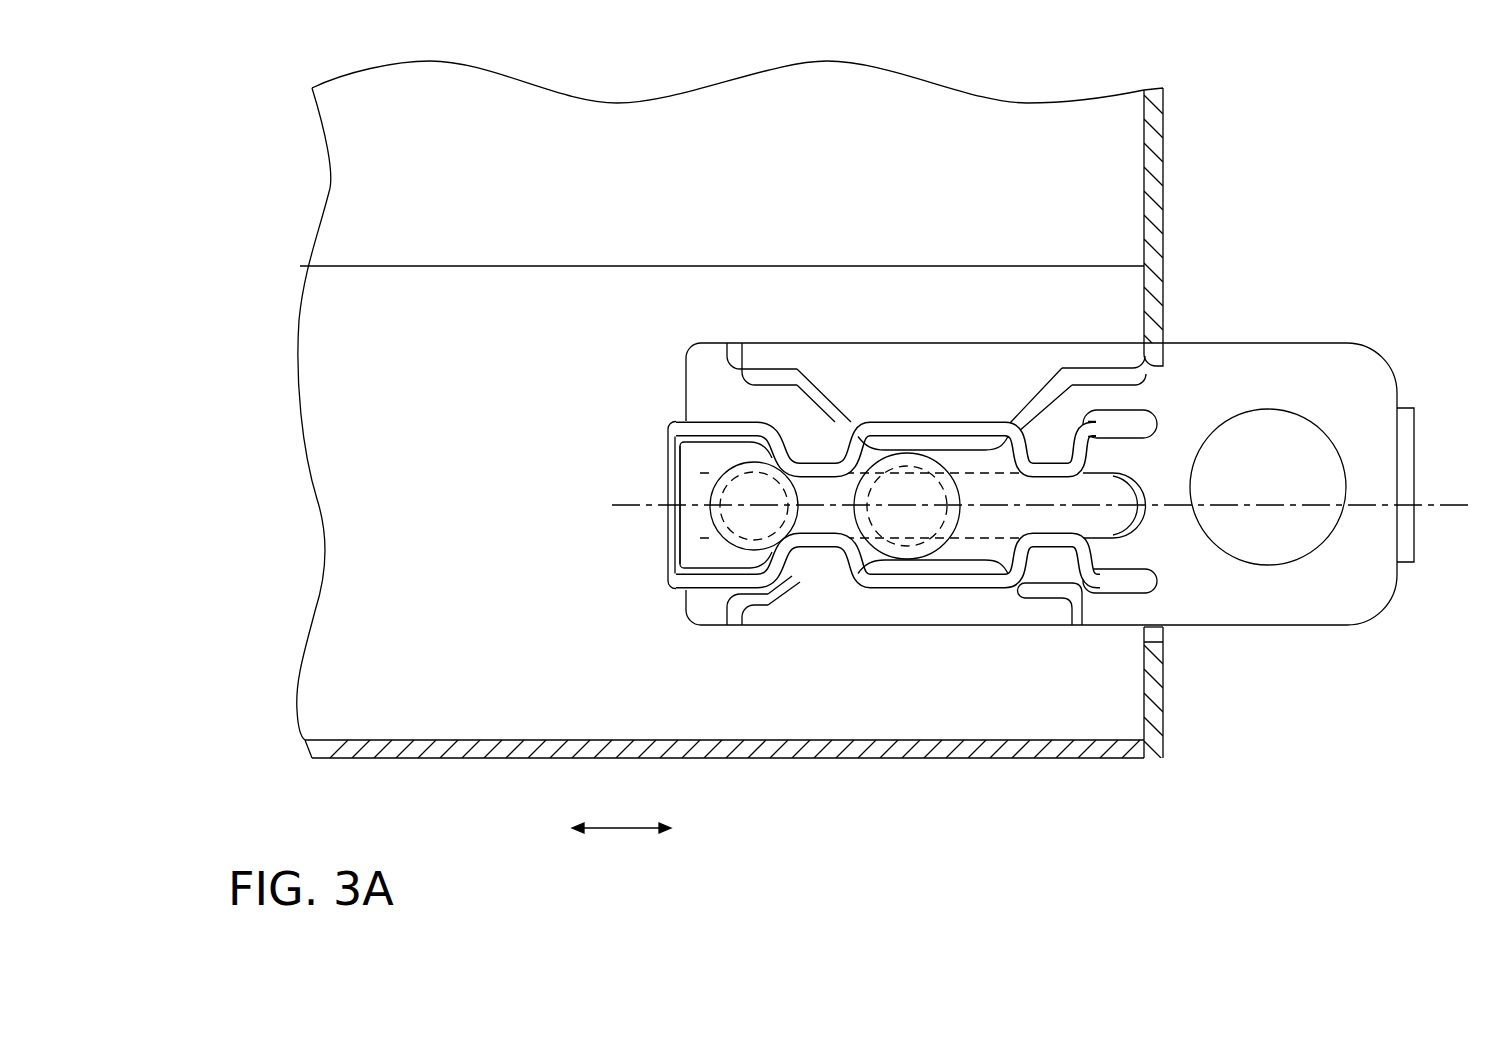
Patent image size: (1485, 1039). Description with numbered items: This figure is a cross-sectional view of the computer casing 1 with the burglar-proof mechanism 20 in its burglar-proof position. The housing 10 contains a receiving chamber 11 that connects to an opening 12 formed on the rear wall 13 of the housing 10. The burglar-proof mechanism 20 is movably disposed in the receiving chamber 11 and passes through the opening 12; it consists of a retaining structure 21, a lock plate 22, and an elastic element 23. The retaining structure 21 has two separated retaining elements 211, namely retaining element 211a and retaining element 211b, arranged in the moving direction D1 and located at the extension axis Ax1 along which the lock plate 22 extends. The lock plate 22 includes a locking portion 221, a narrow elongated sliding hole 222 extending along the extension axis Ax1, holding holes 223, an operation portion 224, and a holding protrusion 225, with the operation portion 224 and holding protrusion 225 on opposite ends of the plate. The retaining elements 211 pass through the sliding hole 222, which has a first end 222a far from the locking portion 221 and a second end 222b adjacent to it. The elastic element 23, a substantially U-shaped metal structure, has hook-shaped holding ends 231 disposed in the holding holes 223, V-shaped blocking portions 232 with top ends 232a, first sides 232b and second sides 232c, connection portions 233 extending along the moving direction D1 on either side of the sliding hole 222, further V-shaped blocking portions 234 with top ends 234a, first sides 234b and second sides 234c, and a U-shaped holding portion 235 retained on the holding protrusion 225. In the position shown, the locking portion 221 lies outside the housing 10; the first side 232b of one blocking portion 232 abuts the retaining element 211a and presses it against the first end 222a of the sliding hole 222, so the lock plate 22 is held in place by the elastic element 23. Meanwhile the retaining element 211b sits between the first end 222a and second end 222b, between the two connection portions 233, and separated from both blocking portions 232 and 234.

The computer casing 1 is at (1411, 105).
The housing 10 is at (1172, 117).
The receiving chamber 11 is at (386, 322).
The opening 12 is at (1153, 633).
The rear wall 13 is at (1153, 680).
The burglar-proof mechanism 20 is at (1347, 332).
The retaining structure 21 is at (125, 128).
The lock plate 22 is at (684, 342).
The elastic element 23 is at (662, 416).
The retaining elements 211 is at (170, 74).
The retaining element 211a is at (738, 477).
The retaining element 211b is at (913, 466).
The locking portion 221 is at (1318, 418).
The sliding hole 222 is at (1000, 487).
The first end 222a is at (717, 495).
The second end 222b is at (1143, 532).
The holding holes 223 is at (1160, 390).
The operation portion 224 is at (1405, 423).
The holding protrusion 225 is at (677, 535).
The holding ends 231 is at (1135, 428).
The blocking portions 232 is at (170, 186).
The top ends 232a is at (797, 385).
The first sides 232b is at (760, 388).
The second sides 232c is at (848, 378).
The connection portions 233 is at (883, 421).
The blocking portions 234 is at (170, 304).
The top ends 234a is at (1050, 487).
The first sides 234b is at (1020, 430).
The second sides 234c is at (1090, 432).
The holding portion 235 is at (670, 451).
The extension axis Ax1 is at (1443, 512).
The moving direction D1 is at (621, 812).